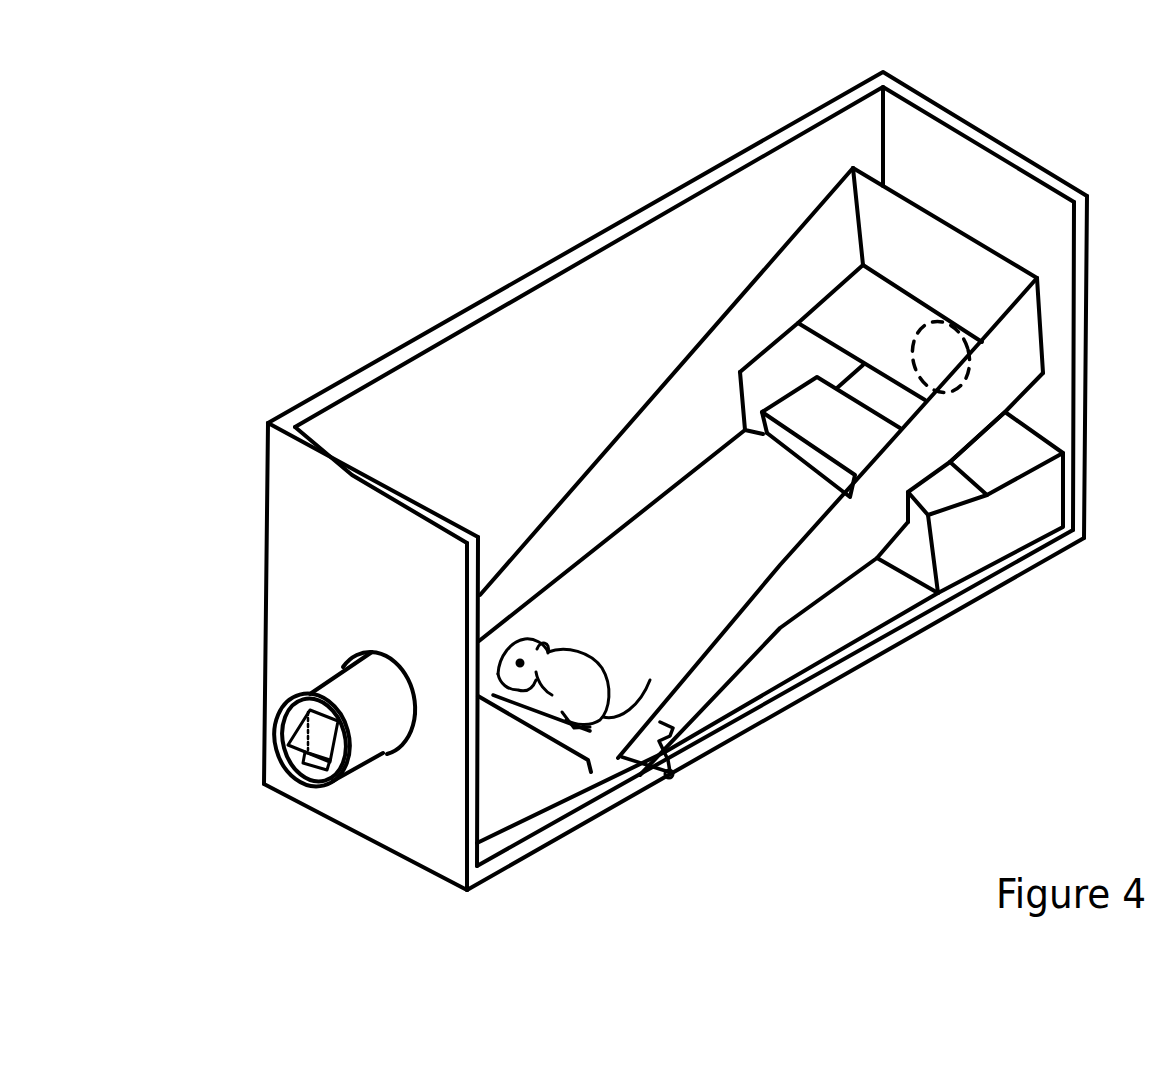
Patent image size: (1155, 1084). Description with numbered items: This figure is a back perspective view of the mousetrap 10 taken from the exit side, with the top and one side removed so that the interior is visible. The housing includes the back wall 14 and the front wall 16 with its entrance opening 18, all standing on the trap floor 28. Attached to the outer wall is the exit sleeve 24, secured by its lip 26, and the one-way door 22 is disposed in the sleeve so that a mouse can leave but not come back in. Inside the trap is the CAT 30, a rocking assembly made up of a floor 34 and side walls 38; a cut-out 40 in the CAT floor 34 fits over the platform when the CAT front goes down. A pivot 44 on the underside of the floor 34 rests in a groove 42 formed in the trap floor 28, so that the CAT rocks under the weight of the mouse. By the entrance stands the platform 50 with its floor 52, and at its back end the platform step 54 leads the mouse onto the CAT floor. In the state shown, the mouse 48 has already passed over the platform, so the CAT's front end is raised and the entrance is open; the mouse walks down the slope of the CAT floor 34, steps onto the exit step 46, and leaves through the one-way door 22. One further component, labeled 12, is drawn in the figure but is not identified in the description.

The mousetrap 10 is at (343, 322).
The top wall 12 is at (575, 303).
The back wall 14 is at (298, 505).
The front wall 16 is at (958, 138).
The entrance opening 18 is at (940, 335).
The one way door 22 is at (296, 732).
The exit sleeve 24 is at (366, 733).
The lip 26 is at (384, 673).
The floor 28 is at (807, 678).
The CAT 30 is at (714, 325).
The CAT floor 34 is at (655, 565).
The side walls 38 is at (667, 427).
The cut-out 40 is at (758, 378).
The groove 42 is at (668, 772).
The pivot 44 is at (672, 772).
The exit step 46 is at (520, 790).
The mouse 48 is at (574, 664).
The platform 50 is at (1005, 533).
The platform floor 52 is at (1012, 453).
The platform step 54 is at (938, 482).